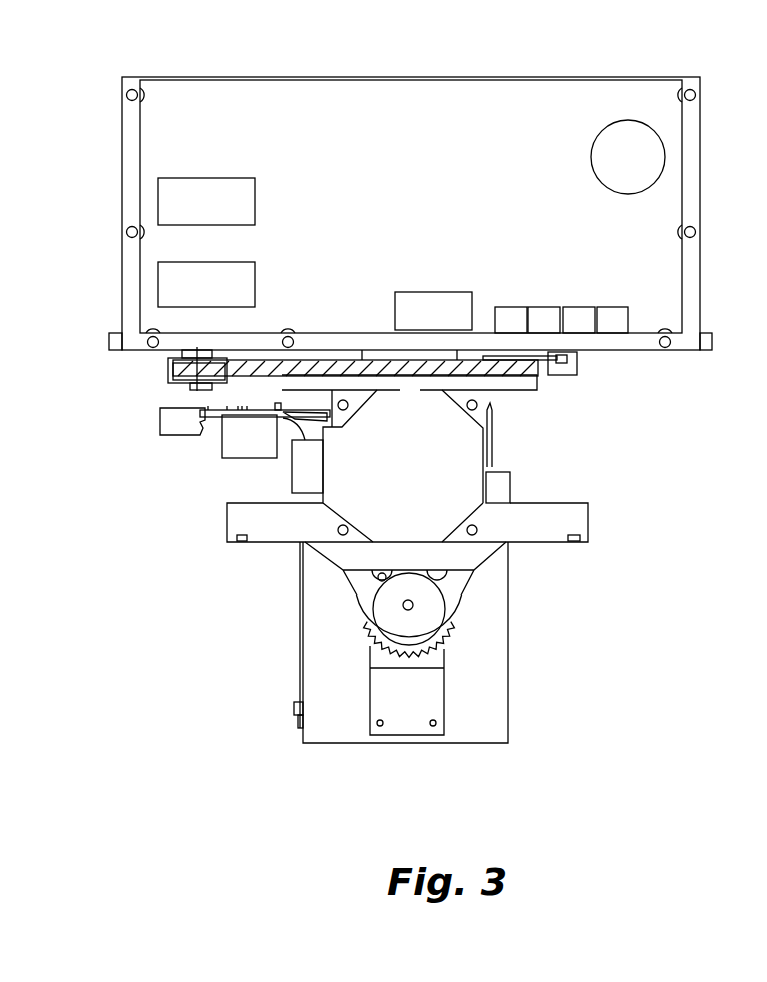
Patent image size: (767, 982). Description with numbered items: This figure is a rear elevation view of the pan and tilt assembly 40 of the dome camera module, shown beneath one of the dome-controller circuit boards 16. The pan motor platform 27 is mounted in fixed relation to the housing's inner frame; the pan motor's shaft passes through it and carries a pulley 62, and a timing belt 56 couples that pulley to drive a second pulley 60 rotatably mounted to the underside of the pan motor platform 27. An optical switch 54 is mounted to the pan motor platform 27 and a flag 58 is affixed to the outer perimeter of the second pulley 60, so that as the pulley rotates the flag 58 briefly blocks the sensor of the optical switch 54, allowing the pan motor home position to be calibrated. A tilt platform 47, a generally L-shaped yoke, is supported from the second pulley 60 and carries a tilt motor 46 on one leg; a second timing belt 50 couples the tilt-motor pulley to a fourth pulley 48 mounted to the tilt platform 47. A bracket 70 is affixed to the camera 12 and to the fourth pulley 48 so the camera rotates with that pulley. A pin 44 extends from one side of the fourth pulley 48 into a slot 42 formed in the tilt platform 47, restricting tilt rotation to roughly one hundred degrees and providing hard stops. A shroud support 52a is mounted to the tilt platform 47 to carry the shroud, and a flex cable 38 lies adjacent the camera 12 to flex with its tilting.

The circuit board 16 is at (490, 92).
The pan motor platform 27 is at (714, 344).
The timing belt 56 is at (168, 363).
The pulley 62 is at (172, 386).
The second pulley 60 is at (515, 386).
The optical switch 54 is at (570, 370).
The flag 58 is at (542, 364).
The pan and tilt assembly 40 is at (186, 488).
The tilt motor 46 is at (467, 491).
The shroud support 52a is at (573, 520).
The camera 12 is at (325, 720).
The flex cable 38 is at (300, 673).
The pin 44 is at (355, 594).
The slot 42 is at (462, 590).
The tilt platform 47 is at (377, 598).
The fourth pulley 48 is at (450, 628).
The second timing belt 50 is at (447, 637).
The bracket 70 is at (428, 698).